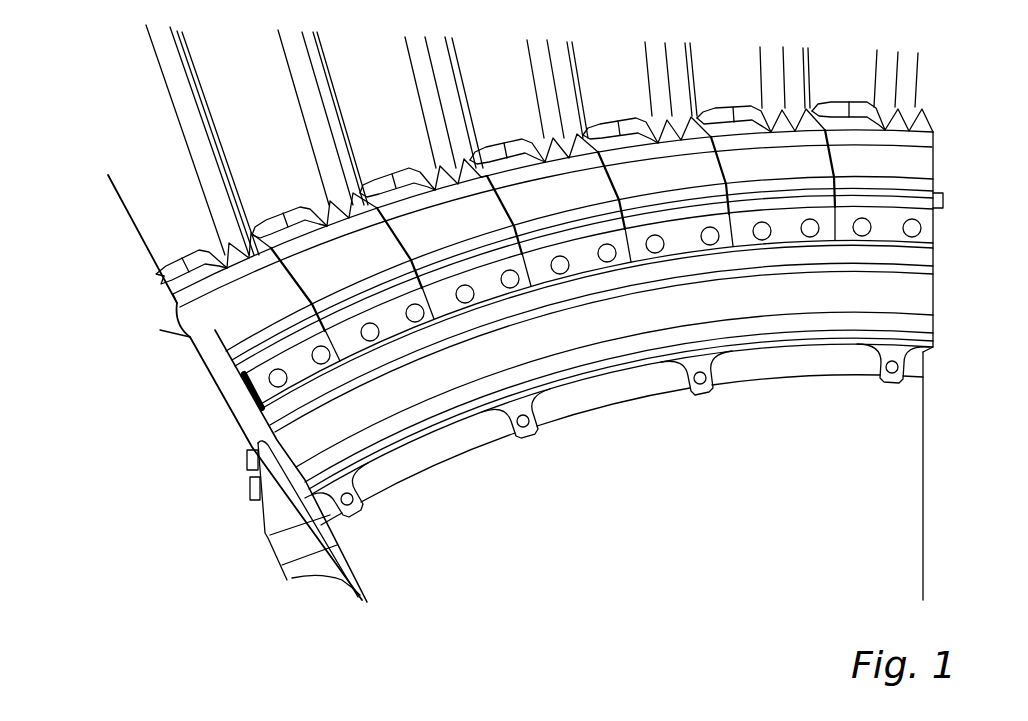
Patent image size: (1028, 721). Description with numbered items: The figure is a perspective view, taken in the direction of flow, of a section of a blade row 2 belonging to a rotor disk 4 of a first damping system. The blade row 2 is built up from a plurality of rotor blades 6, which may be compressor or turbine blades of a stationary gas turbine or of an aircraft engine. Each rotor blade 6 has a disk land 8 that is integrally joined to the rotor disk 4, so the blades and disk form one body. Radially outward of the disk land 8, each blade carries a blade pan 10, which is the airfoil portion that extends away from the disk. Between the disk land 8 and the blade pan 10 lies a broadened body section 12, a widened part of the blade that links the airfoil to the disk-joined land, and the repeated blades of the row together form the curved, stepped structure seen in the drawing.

The blade row 2 is at (125, 55).
The rotor disk 4 is at (925, 470).
The rotor blade 6 is at (170, 105).
The disk land 8 is at (905, 425).
The blade pan 10 is at (907, 77).
The broadened body section 12 is at (190, 333).